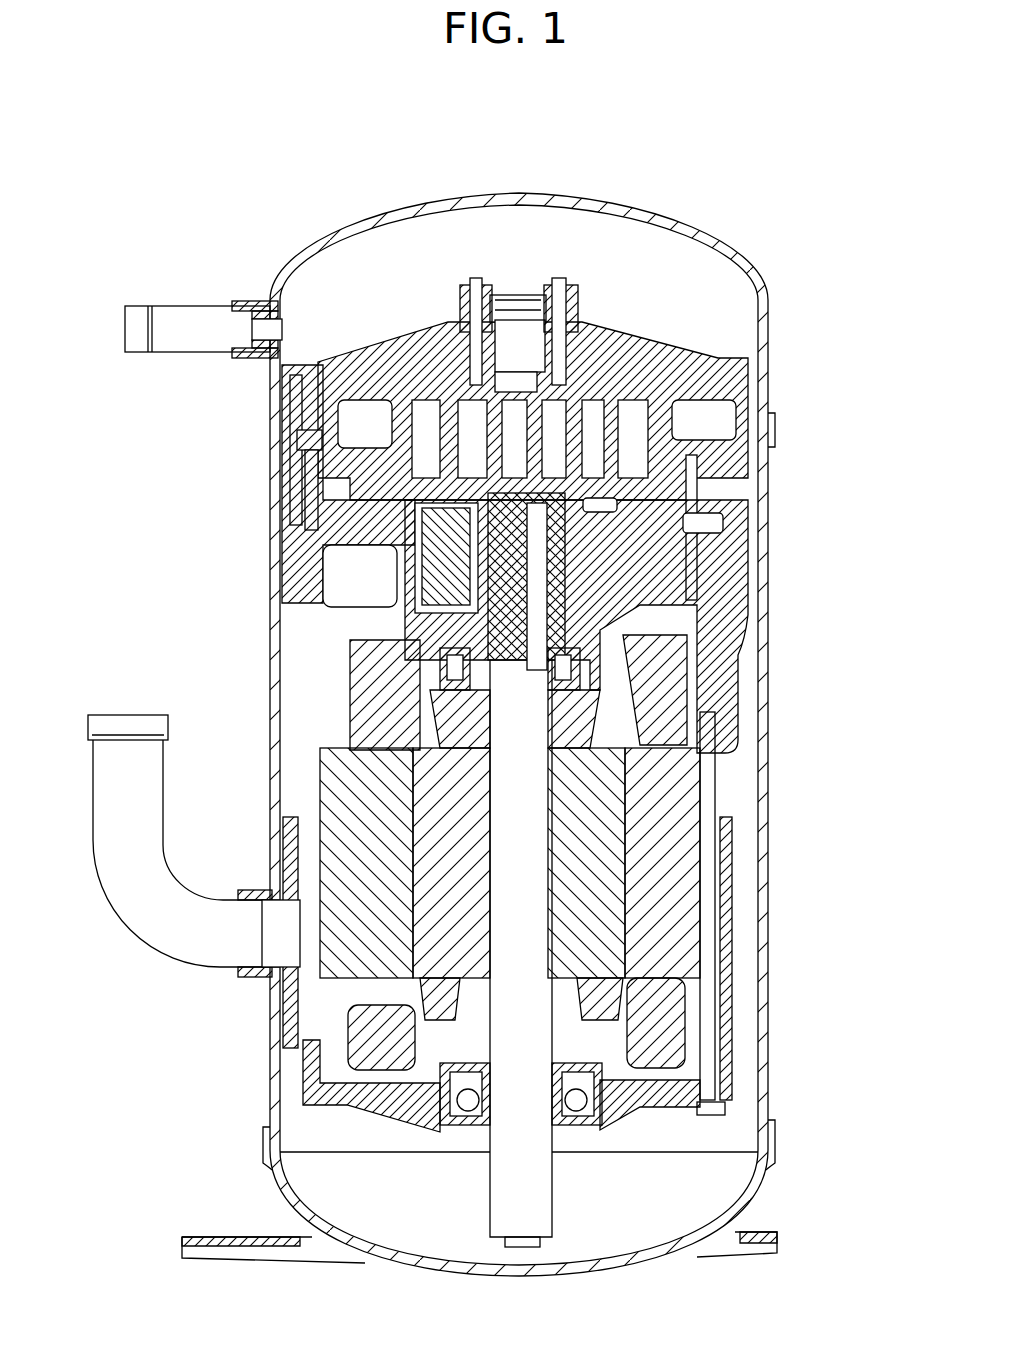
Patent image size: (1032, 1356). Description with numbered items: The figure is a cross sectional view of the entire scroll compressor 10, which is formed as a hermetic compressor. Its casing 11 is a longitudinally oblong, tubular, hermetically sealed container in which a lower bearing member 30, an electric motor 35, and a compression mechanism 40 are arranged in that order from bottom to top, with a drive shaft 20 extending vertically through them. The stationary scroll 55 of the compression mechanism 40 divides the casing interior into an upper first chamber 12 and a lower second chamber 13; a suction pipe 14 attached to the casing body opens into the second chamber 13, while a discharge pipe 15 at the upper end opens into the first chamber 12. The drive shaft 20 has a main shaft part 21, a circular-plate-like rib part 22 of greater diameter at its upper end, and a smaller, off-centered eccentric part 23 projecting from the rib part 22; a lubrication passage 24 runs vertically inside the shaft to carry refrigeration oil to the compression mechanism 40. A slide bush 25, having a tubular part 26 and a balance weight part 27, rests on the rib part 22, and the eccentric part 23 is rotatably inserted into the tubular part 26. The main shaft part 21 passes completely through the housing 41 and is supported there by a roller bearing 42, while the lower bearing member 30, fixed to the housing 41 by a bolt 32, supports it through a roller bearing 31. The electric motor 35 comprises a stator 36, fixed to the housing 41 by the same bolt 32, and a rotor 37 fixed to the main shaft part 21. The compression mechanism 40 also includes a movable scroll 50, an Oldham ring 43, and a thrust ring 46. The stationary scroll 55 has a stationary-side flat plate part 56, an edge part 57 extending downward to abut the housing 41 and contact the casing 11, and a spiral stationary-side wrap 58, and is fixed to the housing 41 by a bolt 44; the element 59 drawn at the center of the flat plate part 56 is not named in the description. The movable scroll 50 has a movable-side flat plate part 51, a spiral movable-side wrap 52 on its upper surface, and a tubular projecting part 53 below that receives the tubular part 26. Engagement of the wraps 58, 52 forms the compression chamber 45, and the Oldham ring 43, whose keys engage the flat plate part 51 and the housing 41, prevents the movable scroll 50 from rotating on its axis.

The scroll compressor 10 is at (290, 212).
The casing 11 is at (455, 200).
The first chamber 12 is at (385, 255).
The second chamber 13 is at (302, 783).
The suction pipe 14 is at (178, 875).
The discharge pipe 15 is at (178, 325).
The drive shaft 20 is at (490, 1215).
The main shaft part 21 is at (540, 1170).
The rib part 22 is at (595, 623).
The eccentric part 23 is at (555, 597).
The lubrication passage 24 is at (535, 640).
The slide bush 25 is at (603, 583).
The tubular part 26 is at (438, 598).
The balance weight part 27 is at (432, 560).
The lower bearing member 30 is at (335, 1100).
The roller bearing 31 is at (450, 1098).
The bolt 32 is at (710, 1118).
The electric motor 35 is at (328, 980).
The stator 36 is at (668, 927).
The rotor 37 is at (610, 877).
The compression mechanism 40 is at (468, 423).
The housing 41 is at (305, 565).
The roller bearing 42 is at (390, 656).
The Oldham ring 43 is at (728, 495).
The bolt 44 is at (300, 440).
The compression chamber 45 is at (595, 405).
The thrust ring 46 is at (685, 522).
The movable scroll 50 is at (378, 478).
The movable-side flat plate part 51 is at (692, 478).
The movable-side wrap 52 is at (655, 425).
The projecting part 53 is at (580, 525).
The stationary scroll 55 is at (735, 360).
The stationary-side flat plate part 56 is at (388, 365).
The edge part 57 is at (290, 482).
The stationary-side wrap 58 is at (440, 432).
The discharge valve 59 is at (510, 380).